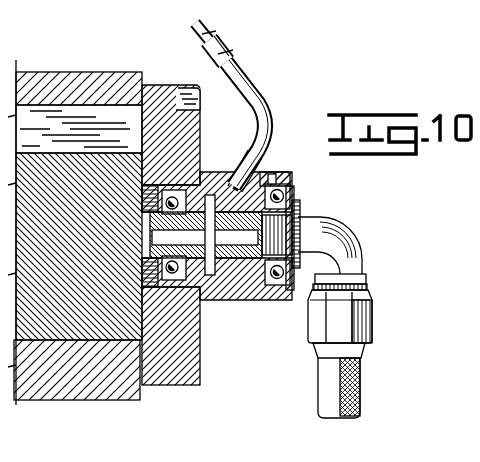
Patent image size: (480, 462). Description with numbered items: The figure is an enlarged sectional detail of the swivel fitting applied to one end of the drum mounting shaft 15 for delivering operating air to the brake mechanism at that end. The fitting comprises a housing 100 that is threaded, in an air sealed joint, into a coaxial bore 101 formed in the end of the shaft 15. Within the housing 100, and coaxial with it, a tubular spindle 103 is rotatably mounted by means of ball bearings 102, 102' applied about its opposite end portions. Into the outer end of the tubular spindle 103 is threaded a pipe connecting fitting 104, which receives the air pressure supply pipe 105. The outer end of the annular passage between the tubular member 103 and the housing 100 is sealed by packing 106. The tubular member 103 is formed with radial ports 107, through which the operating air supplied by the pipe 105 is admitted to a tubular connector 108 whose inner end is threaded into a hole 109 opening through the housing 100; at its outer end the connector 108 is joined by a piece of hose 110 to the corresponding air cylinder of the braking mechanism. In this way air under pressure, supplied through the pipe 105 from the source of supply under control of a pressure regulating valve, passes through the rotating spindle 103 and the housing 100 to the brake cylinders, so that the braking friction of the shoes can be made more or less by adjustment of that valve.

The shaft 15 is at (140, 385).
The housing 100 is at (222, 300).
The coaxial bore 101 is at (200, 357).
The ball bearing 102 is at (171, 125).
The ball bearing 102' is at (317, 228).
The tubular spindle 103 is at (299, 208).
The pipe connecting fitting 104 is at (325, 232).
The air pressure supply pipe 105 is at (360, 380).
The packing 106 is at (262, 182).
The radial ports 107 is at (232, 285).
The tubular connector 108 is at (265, 96).
The holes 109 is at (215, 176).
The hose 110 is at (212, 36).